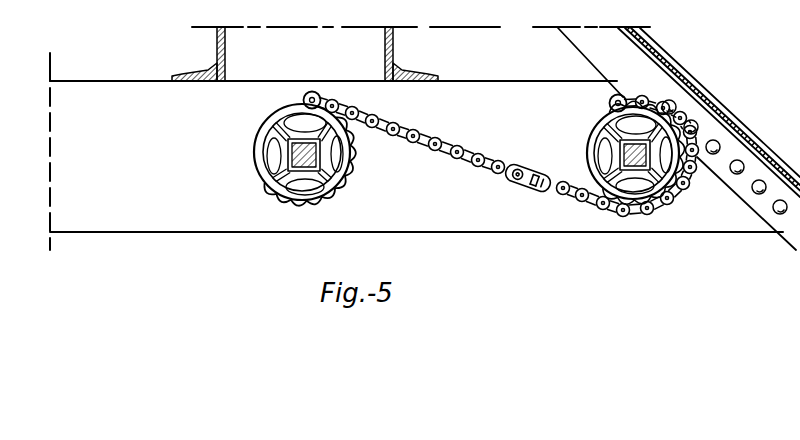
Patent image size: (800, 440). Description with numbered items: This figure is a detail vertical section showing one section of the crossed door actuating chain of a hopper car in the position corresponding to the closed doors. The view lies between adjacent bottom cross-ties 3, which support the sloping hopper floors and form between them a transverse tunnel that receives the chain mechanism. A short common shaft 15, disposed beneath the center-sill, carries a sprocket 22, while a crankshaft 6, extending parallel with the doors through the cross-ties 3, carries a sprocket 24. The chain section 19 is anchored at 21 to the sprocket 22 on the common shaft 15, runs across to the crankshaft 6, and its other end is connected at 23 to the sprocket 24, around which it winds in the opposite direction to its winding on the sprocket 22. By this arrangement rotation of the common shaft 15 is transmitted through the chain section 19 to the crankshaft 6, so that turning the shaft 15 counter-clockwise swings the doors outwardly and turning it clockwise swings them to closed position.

The bottom cross-tie 3 is at (206, 232).
The crankshaft 6 is at (622, 154).
The common shaft 15 is at (292, 153).
The chain section 19 is at (472, 161).
The anchor point 21 is at (303, 100).
The sprocket 22 is at (334, 203).
The connection point 23 is at (611, 98).
The sprocket 24 is at (659, 190).